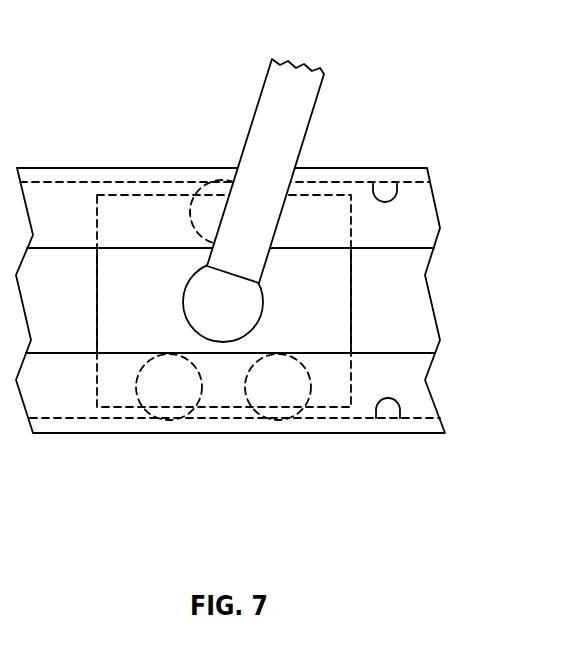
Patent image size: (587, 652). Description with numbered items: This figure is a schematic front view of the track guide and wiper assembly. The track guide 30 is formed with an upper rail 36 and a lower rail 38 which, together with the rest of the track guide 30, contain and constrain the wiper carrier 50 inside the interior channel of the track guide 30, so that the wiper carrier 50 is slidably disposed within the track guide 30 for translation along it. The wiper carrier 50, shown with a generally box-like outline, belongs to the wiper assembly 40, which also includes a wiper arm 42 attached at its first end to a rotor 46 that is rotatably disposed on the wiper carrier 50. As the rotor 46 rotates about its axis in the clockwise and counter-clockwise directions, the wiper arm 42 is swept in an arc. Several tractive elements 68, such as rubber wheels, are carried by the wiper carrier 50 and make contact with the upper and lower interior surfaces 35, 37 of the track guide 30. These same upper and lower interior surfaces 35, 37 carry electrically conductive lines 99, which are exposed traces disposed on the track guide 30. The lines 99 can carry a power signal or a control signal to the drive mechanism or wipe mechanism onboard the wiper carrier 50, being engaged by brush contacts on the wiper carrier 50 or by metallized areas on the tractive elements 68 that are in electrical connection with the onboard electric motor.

The track guide 30 is at (106, 168).
The upper interior surface 35 is at (395, 195).
The upper rail 36 is at (66, 210).
The lower interior surface 37 is at (399, 418).
The lower rail 38 is at (48, 388).
The wiper assembly 40 is at (396, 57).
The wiper arm 42 is at (272, 100).
The rotor 46 is at (205, 300).
The wiper carrier 50 is at (353, 292).
The tractive elements 68 is at (192, 213).
The electrically conductive lines 99 is at (243, 305).